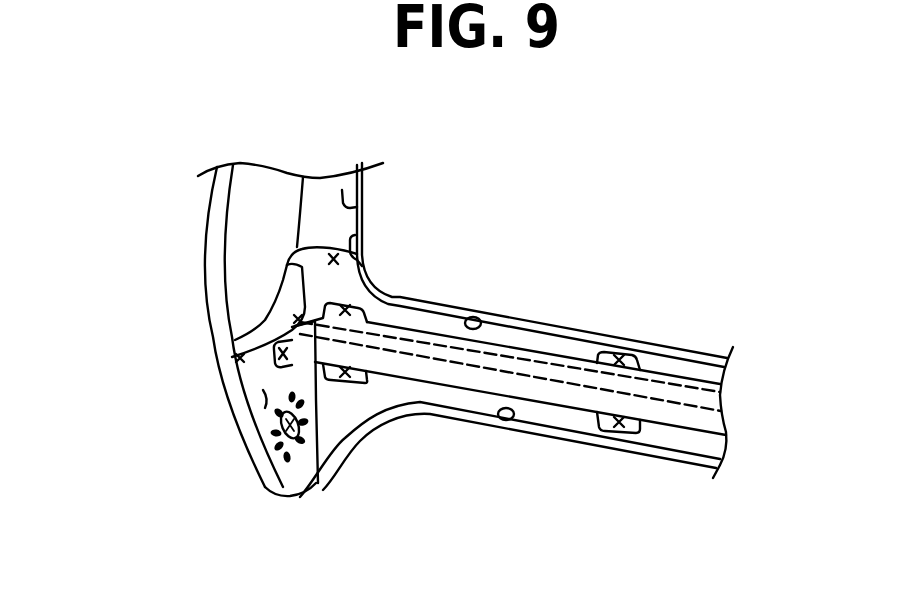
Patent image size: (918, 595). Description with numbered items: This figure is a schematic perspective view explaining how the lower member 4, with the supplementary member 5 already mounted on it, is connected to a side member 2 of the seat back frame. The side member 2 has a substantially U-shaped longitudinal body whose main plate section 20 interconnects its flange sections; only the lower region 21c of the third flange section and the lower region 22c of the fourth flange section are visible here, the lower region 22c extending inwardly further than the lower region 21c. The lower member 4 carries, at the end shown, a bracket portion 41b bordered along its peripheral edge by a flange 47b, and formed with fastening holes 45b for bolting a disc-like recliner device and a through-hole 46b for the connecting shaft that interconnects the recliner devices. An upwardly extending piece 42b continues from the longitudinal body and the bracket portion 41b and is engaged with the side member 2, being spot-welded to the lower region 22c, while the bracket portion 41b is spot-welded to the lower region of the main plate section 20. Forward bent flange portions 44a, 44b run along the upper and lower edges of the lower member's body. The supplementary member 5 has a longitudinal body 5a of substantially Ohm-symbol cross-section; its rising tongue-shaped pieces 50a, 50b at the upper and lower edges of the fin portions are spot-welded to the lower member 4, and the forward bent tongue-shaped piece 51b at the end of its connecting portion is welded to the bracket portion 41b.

The second side member 2 is at (228, 336).
The main plate section 20 is at (270, 190).
The lower region of the third flange section 21c is at (217, 262).
The lower region of the fourth flange section 22c is at (363, 203).
The upwardly extending piece 42b is at (355, 235).
The forward bent flange portion 44a is at (475, 315).
The lower member 4 is at (514, 383).
The rising tongue-shaped pieces 50a is at (599, 356).
The forward bent tongue-shaped piece 51b is at (280, 372).
The bracket portion 41b is at (263, 409).
The flange 47b is at (258, 440).
The fastening holes 45b is at (302, 416).
The through-hole 46b is at (303, 402).
The forward bent flange portion 44b is at (503, 420).
The longitudinal body 5a is at (548, 402).
The rising tongue-shaped pieces 50b is at (604, 432).
The supplementary member 5 is at (510, 477).